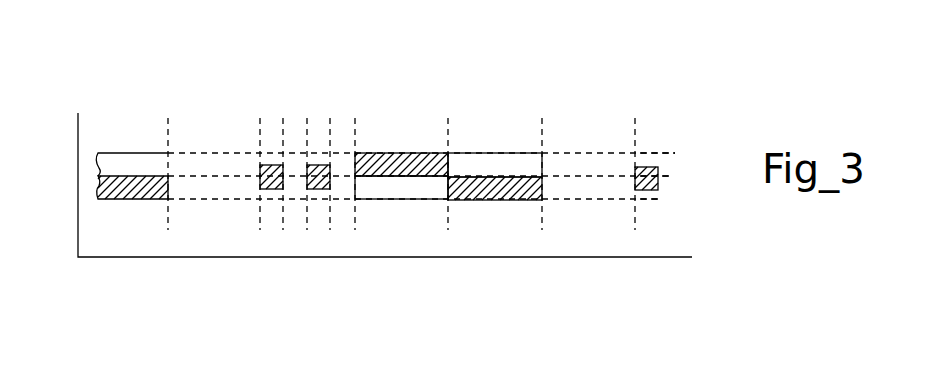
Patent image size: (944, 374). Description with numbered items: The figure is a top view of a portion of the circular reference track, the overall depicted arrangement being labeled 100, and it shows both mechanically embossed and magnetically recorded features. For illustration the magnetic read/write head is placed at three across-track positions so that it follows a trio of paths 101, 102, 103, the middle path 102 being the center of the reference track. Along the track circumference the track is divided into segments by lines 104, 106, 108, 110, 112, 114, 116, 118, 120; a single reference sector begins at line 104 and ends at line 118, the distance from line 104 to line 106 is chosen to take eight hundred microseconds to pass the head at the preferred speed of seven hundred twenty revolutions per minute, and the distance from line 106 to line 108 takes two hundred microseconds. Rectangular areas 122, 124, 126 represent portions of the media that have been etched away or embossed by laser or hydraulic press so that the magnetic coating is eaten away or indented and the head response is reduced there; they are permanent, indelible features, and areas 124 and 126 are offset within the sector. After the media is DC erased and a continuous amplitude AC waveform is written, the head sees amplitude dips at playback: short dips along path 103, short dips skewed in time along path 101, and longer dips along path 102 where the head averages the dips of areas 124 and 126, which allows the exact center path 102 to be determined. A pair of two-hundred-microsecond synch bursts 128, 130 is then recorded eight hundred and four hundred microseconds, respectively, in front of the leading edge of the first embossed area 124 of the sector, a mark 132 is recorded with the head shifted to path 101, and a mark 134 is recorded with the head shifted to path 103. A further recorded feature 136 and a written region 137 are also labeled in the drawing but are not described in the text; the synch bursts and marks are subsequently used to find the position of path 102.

The servo pattern / track layout 100 is at (163, 50).
The path 101 is at (660, 157).
The path 102 is at (678, 167).
The path 103 is at (667, 200).
The line 104 is at (166, 213).
The line 106 is at (260, 215).
The line 108 is at (283, 122).
The line 110 is at (307, 221).
The line 112 is at (332, 122).
The line 114 is at (355, 222).
The line 116 is at (448, 116).
The line 118 is at (542, 222).
The line 120 is at (633, 128).
The rectangular embossed area 122 is at (163, 163).
The embossed area 124 is at (423, 188).
The embossed area 126 is at (463, 157).
The synch burst 128 is at (261, 170).
The synch burst 130 is at (308, 187).
The mark 132 is at (370, 168).
The mark 134 is at (471, 193).
The index/sync bit 136 is at (635, 185).
The written (magnetized) region 137 is at (143, 188).